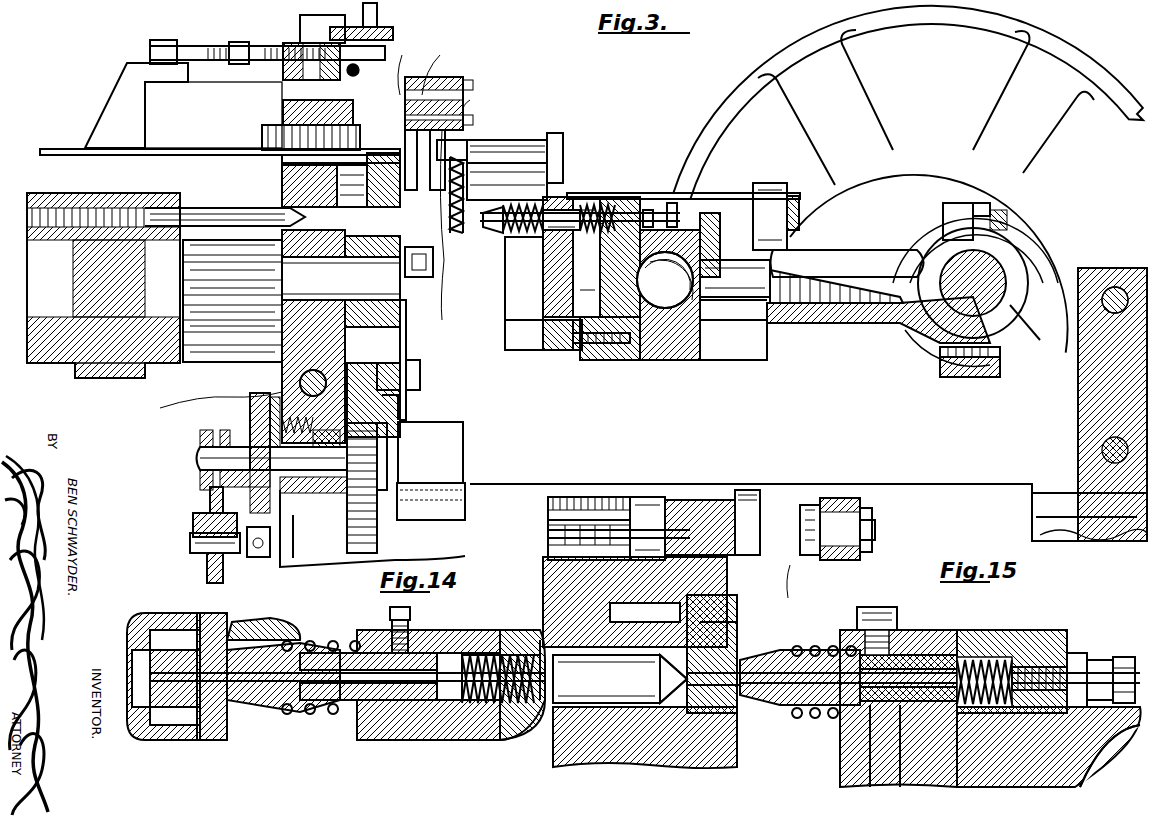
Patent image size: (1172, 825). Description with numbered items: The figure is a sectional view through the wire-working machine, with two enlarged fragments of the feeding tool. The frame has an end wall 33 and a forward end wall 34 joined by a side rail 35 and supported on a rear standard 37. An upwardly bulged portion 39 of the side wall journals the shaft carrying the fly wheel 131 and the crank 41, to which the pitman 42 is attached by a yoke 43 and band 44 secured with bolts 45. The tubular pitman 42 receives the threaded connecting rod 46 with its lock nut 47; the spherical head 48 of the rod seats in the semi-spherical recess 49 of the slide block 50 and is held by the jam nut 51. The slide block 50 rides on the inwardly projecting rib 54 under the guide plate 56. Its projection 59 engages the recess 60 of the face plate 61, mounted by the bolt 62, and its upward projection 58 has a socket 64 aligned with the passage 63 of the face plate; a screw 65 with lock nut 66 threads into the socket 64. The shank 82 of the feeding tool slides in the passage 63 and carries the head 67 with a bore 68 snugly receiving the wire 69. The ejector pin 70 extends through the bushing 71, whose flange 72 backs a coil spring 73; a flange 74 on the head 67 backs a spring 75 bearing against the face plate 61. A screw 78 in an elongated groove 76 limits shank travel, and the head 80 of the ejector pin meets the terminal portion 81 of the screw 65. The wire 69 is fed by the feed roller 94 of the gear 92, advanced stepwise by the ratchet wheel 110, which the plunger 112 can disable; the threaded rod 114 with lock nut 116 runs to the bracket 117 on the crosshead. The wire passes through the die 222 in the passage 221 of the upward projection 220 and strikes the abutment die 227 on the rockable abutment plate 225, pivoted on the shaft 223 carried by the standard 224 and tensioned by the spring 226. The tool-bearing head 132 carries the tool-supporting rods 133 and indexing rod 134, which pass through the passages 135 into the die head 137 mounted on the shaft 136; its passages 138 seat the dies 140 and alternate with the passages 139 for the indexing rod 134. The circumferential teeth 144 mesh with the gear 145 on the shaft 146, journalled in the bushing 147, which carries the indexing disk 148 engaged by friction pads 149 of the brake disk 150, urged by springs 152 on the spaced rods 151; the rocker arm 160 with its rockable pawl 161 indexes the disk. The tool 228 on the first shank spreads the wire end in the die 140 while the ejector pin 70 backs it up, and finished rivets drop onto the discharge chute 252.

In FIG. 3, the fly wheel 131 is at (1128, 32).
In FIG. 3, the upwardly bulged portion 39 is at (1028, 195).
In FIG. 3, the yoke 43 is at (958, 203).
In FIG. 3, the crank 41 is at (1060, 236).
In FIG. 3, the end rail or end wall 33 is at (1147, 380).
In FIG. 3, the rear standard 37 is at (1115, 545).
In FIG. 3, the bracket 117 is at (128, 110).
In FIG. 3, the ratchet wheel 110 is at (290, 30).
In FIG. 3, the lock nut 116 is at (239, 42).
In FIG. 3, the plunger 112 is at (385, 30).
In FIG. 3, the gear 92 is at (283, 125).
In FIG. 3, the threaded rod 114 is at (213, 113).
In FIG. 3, the wire or workpiece 69 is at (222, 150).
In FIG. 14, the wire or workpiece 69 is at (200, 730).
In FIG. 15, the wire or workpiece 69 is at (548, 535).
In FIG. 3, the feed roller 94 is at (282, 162).
In FIG. 15, the feed roller 94 is at (548, 545).
In FIG. 3, the circumferential teeth 144 is at (282, 175).
In FIG. 3, the tool-bearing head 132 is at (45, 365).
In FIG. 3, the tool-supporting rod 133 is at (238, 226).
In FIG. 15, the tool-supporting rod 133 is at (612, 750).
In FIG. 3, the indexing rod 134 is at (228, 362).
In FIG. 3, the passage 135 is at (341, 336).
In FIG. 3, the passage 138 is at (389, 336).
In FIG. 3, the head or abutment die 227 is at (442, 225).
In FIG. 15, the head or abutment die 227 is at (796, 587).
In FIG. 3, the die head 137 is at (408, 312).
In FIG. 15, the die head 137 is at (740, 750).
In FIG. 3, the shaft 136 is at (408, 365).
In FIG. 3, the passage 139 is at (416, 392).
In FIG. 3, the spaced rod 151 is at (392, 398).
In FIG. 3, the gear 145 is at (347, 540).
In FIG. 3, the bushing 147 is at (398, 457).
In FIG. 3, the discharge chute 252 is at (437, 518).
In FIG. 3, the indexing disk 148 is at (200, 445).
In FIG. 3, the forward end wall or end rail 34 is at (219, 403).
In FIG. 15, the forward end wall or end rail 34 is at (730, 572).
In FIG. 3, the brake disk 150 is at (210, 497).
In FIG. 3, the friction pad 149 is at (193, 520).
In FIG. 3, the rocker arm 160 is at (190, 545).
In FIG. 3, the rockable pawl 161 is at (207, 583).
In FIG. 3, the spring 152 is at (258, 557).
In FIG. 3, the shaft 146 is at (288, 567).
In FIG. 3, the rockable abutment plate 225 is at (463, 133).
In FIG. 15, the rockable abutment plate 225 is at (857, 555).
In FIG. 3, the upward projection 220 is at (412, 67).
In FIG. 15, the upward projection 220 is at (600, 497).
In FIG. 3, the passage 221 is at (443, 65).
In FIG. 15, the passage 221 is at (740, 538).
In FIG. 3, the die 222 is at (470, 100).
In FIG. 15, the die 222 is at (790, 560).
In FIG. 3, the standard 224 is at (562, 140).
In FIG. 3, the shaft 223 is at (540, 135).
In FIG. 3, the spring 226 is at (470, 180).
In FIG. 3, the recess 60 is at (543, 290).
In FIG. 3, the projection 59 is at (530, 340).
In FIG. 3, the inwardly projecting rib 54 is at (545, 350).
In FIG. 3, the bolt 62 is at (573, 360).
In FIG. 3, the semi-spherical recess 49 is at (618, 360).
In FIG. 15, the semi-spherical recess 49 is at (1120, 768).
In FIG. 3, the spherical head 48 is at (655, 360).
In FIG. 3, the lock nut 66 is at (665, 280).
In FIG. 15, the lock nut 66 is at (1080, 653).
In FIG. 3, the passage 63 is at (568, 200).
In FIG. 15, the passage 63 is at (860, 760).
In FIG. 3, the shank 82 is at (555, 245).
In FIG. 14, the shank 82 is at (385, 740).
In FIG. 15, the shank 82 is at (838, 768).
In FIG. 3, the face plate 61 is at (570, 252).
In FIG. 14, the face plate 61 is at (357, 738).
In FIG. 15, the face plate 61 is at (955, 650).
In FIG. 3, the screw 65 is at (658, 203).
In FIG. 14, the screw 65 is at (515, 735).
In FIG. 15, the screw 65 is at (1122, 657).
In FIG. 3, the projection 58 is at (643, 193).
In FIG. 14, the projection 58 is at (520, 640).
In FIG. 15, the projection 58 is at (1040, 645).
In FIG. 3, the socket 64 is at (628, 190).
In FIG. 14, the socket 64 is at (538, 630).
In FIG. 15, the socket 64 is at (992, 645).
In FIG. 3, the guide plate 56 is at (747, 250).
In FIG. 3, the lock nut 47 is at (805, 228).
In FIG. 3, the pitman 42 is at (833, 343).
In FIG. 3, the band 44 is at (1035, 315).
In FIG. 3, the bolt 45 is at (985, 378).
In FIG. 3, the slide block 50 is at (717, 360).
In FIG. 3, the jam nut 51 is at (737, 360).
In FIG. 3, the threaded connecting rod 46 is at (770, 360).
In FIG. 14, the passage or bore 68 is at (225, 725).
In FIG. 15, the passage or bore 68 is at (765, 655).
In FIG. 14, the head 67 is at (258, 712).
In FIG. 14, the coil spring 73 is at (480, 640).
In FIG. 15, the coil spring 73 is at (1012, 642).
In FIG. 14, the flange 74 is at (290, 718).
In FIG. 15, the flange 74 is at (800, 641).
In FIG. 14, the ejector pin 70 is at (312, 712).
In FIG. 15, the ejector pin 70 is at (845, 648).
In FIG. 14, the spring 75 is at (318, 645).
In FIG. 14, the bushing 71 is at (423, 740).
In FIG. 15, the bushing 71 is at (912, 630).
In FIG. 14, the terminal portion or projection 81 is at (465, 740).
In FIG. 14, the elongated groove 76 is at (385, 620).
In FIG. 14, the screw 78 is at (410, 622).
In FIG. 14, the flange 72 is at (447, 650).
In FIG. 15, the flange 72 is at (898, 765).
In FIG. 14, the head 80 is at (530, 620).
In FIG. 15, the side rail or side wall 35 is at (520, 486).
In FIG. 15, the tool 228 is at (700, 745).
In FIG. 15, the die 140 is at (745, 715).